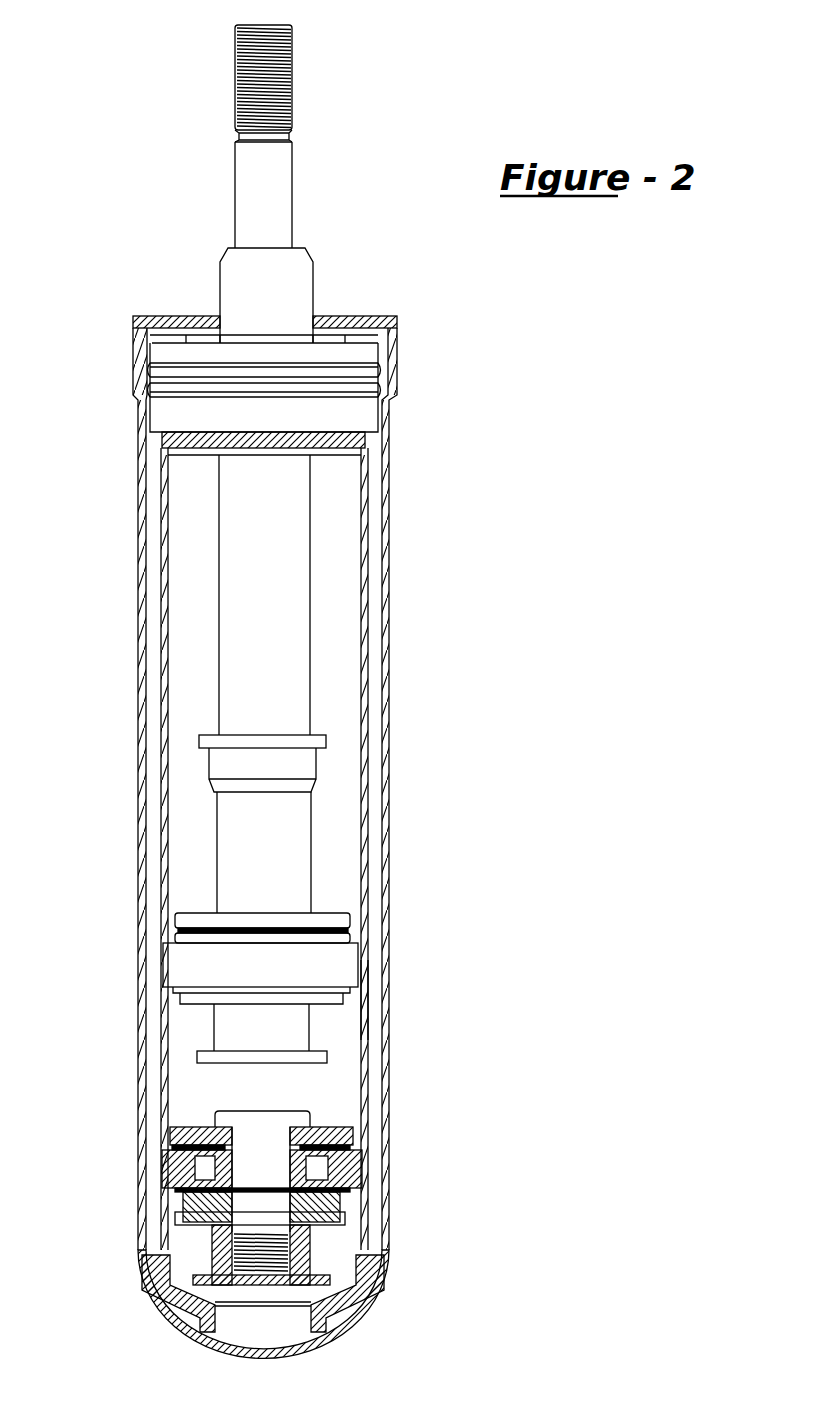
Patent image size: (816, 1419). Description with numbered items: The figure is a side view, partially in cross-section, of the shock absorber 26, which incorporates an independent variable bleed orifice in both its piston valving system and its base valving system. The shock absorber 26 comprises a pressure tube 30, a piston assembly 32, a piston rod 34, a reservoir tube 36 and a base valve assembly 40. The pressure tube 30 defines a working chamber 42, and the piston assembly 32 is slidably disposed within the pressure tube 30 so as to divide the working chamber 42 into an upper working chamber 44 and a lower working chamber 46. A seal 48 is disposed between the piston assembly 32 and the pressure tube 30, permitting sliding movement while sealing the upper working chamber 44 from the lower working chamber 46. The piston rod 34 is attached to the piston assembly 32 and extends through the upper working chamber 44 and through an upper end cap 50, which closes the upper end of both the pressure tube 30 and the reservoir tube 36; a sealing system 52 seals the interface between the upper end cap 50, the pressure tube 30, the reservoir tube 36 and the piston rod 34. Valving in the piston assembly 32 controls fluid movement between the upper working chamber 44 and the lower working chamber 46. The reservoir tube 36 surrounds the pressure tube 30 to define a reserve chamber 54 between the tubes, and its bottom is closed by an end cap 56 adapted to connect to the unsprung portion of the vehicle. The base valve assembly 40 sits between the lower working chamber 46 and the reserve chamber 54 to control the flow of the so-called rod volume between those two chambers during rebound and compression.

The shock absorber 26 is at (545, 50).
The pressure tube 30 is at (367, 473).
The piston assembly 32 is at (333, 966).
The piston rod 34 is at (270, 537).
The reservoir tube 36 is at (385, 667).
The base valve assembly 40 is at (312, 1113).
The working chamber 42 is at (333, 1093).
The upper working chamber 44 is at (363, 548).
The lower working chamber 46 is at (190, 1033).
The seal 48 is at (172, 962).
The upper end cap 50 is at (367, 357).
The sealing system 52 is at (233, 338).
The reserve chamber 54 is at (372, 1000).
The end cap 56 is at (320, 1325).